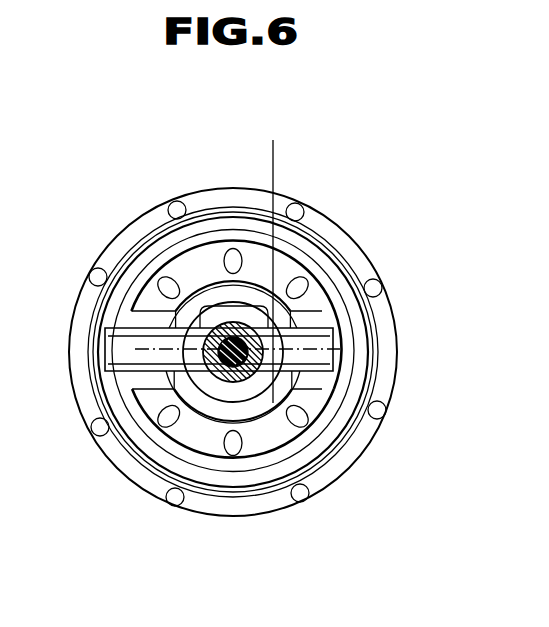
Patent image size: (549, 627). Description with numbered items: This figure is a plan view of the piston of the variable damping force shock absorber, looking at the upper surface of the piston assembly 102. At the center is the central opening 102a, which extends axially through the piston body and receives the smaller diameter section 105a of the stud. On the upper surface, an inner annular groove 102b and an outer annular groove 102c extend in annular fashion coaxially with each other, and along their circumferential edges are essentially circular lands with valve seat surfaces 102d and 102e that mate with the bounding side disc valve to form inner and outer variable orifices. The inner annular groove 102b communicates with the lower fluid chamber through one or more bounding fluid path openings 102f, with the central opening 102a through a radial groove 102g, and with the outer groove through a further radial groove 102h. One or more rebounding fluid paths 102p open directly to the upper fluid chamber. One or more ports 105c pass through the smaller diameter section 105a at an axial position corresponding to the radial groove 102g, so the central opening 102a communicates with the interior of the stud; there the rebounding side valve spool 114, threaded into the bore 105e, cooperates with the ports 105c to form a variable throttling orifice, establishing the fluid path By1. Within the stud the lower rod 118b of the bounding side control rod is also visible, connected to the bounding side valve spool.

The piston assembly 102 is at (82, 277).
The rebounding fluid paths 102p is at (177, 210).
The valve seat surface 102e is at (323, 247).
The valve seat surface 102d is at (340, 288).
The bounding fluid path openings 102f is at (138, 252).
The outer annular groove 102c is at (333, 430).
The lower rod 118b is at (302, 444).
The rebounding side valve spool 114 is at (168, 456).
The radial groove 102h is at (128, 346).
The radial groove 102g is at (345, 351).
The ports 105c is at (300, 352).
The smaller diameter section 105a is at (145, 405).
The bore 105e is at (215, 395).
The inner annular groove 102b is at (215, 445).
The central opening 102a is at (204, 304).
The fluid path By1 is at (276, 260).